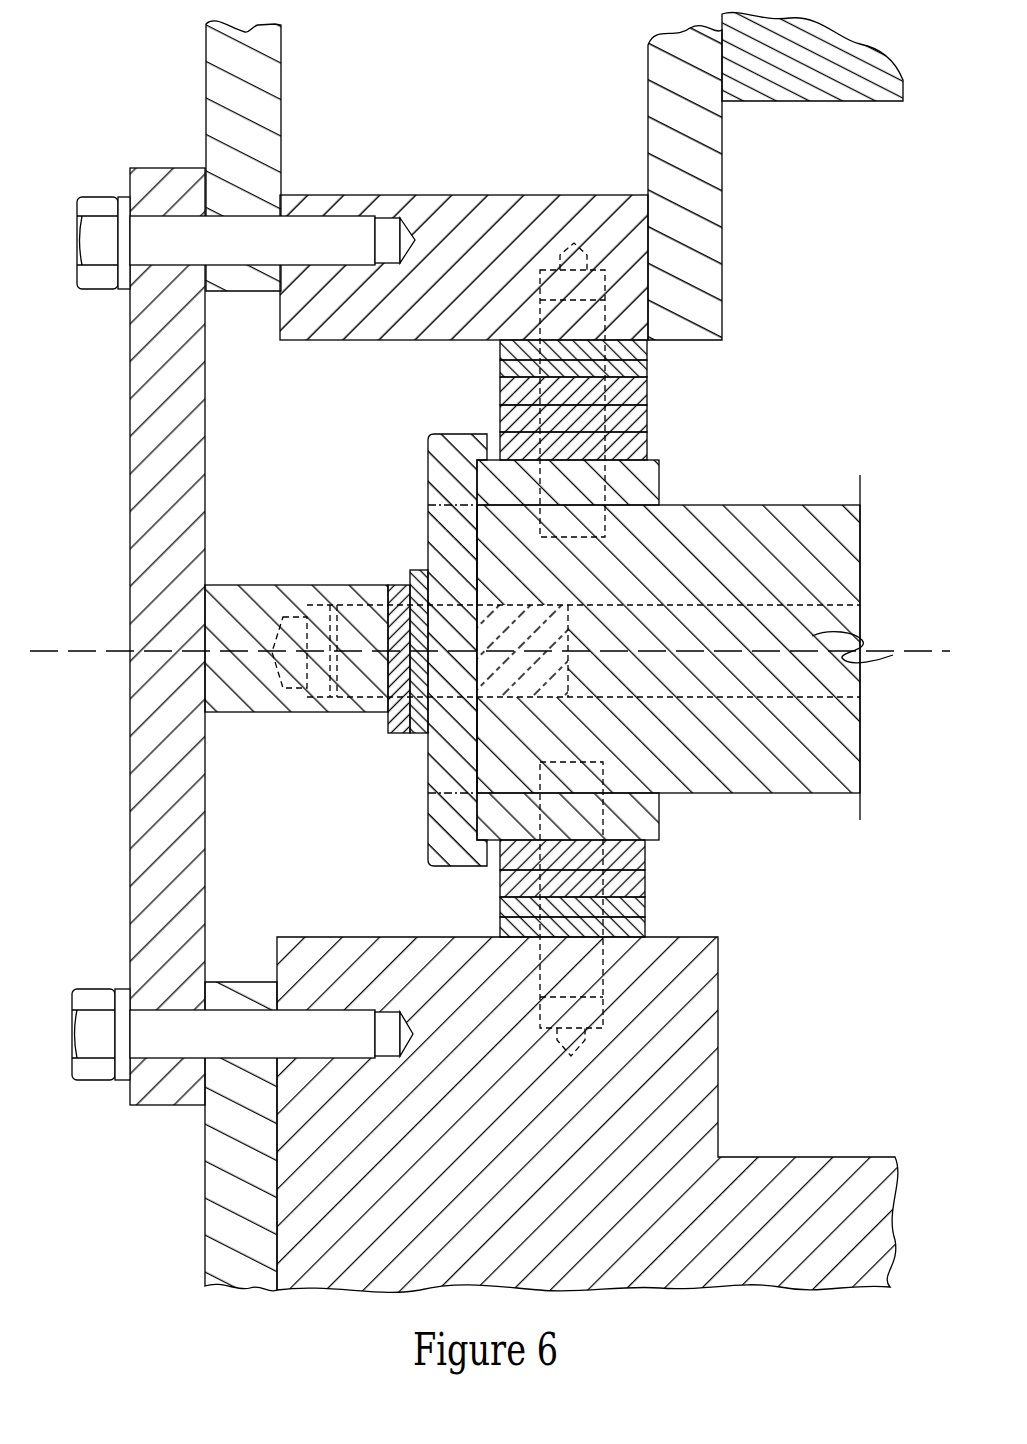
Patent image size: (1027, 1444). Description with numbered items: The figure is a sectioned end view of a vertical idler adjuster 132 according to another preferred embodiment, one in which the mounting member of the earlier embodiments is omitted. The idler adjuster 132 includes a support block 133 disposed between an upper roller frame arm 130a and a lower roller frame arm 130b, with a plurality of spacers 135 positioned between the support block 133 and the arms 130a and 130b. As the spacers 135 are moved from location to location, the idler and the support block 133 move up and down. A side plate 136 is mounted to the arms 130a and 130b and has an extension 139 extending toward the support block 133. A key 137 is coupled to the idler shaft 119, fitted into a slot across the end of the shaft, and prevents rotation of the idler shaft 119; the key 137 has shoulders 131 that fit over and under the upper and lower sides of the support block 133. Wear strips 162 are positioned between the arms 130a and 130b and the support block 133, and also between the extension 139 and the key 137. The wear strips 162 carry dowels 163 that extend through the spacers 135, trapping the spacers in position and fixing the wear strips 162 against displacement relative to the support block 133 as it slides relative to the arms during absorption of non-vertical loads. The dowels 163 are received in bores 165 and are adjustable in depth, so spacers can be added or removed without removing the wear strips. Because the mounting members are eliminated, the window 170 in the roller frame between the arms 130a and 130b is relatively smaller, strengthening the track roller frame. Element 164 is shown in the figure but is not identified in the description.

The idler shaft 119 is at (848, 738).
The upper roller frame arm 130a is at (500, 207).
The lower roller frame arm 130b is at (798, 1200).
The shoulders 131 is at (482, 457).
The vertical idler adjuster 132 is at (381, 780).
The support block 133 is at (658, 476).
The spacers 135 is at (647, 387).
The side plate 136 is at (160, 762).
The key 137 is at (440, 790).
The extension 139 is at (253, 600).
The wear strips 162 is at (402, 700).
The dowels 163 is at (543, 537).
The key 164 is at (542, 632).
The bores 165 is at (604, 462).
The window 170 is at (270, 380).